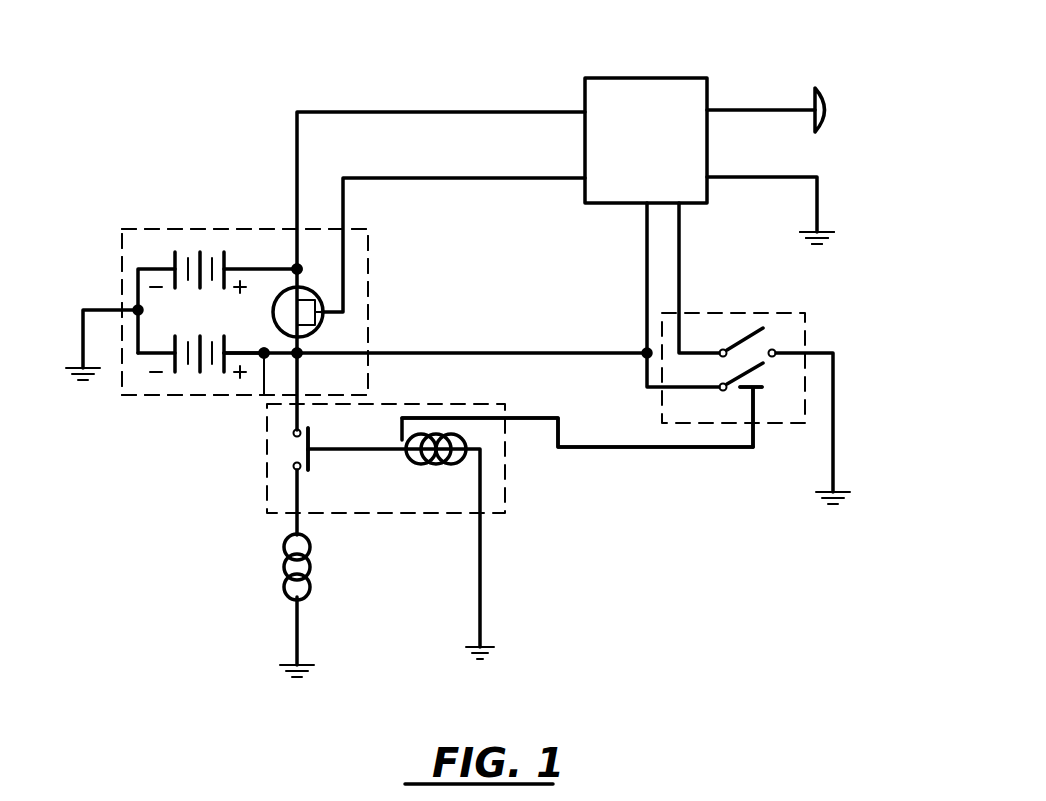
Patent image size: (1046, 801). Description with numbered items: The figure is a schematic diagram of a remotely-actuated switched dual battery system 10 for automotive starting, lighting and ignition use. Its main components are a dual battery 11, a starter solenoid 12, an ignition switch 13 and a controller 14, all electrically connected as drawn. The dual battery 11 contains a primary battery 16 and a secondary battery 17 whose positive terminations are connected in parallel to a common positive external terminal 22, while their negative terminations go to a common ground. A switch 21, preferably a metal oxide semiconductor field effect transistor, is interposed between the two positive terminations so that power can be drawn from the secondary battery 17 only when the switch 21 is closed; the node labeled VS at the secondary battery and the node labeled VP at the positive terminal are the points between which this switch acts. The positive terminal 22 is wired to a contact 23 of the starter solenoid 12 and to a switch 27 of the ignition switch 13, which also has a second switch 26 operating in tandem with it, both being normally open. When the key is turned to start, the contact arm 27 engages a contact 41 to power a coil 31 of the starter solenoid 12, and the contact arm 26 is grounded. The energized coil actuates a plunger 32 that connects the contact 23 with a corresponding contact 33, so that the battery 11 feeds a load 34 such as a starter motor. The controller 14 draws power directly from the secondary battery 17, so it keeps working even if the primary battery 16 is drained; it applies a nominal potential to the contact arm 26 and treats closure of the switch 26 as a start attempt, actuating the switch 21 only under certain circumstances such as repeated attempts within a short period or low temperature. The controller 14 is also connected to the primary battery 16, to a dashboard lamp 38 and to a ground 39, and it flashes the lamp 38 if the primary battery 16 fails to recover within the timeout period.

The remotely-actuated switched dual battery system 10 is at (203, 168).
The dual battery 11 is at (122, 229).
The starter solenoid 12 is at (267, 513).
The ignition switch 13 is at (805, 318).
The controller 14 is at (647, 78).
The primary battery 16 is at (190, 390).
The secondary battery 17 is at (185, 252).
The switch 21 is at (273, 312).
The positive external terminal 22 is at (300, 352).
The contact 23 is at (293, 433).
The second switch 26 is at (746, 330).
The switch 27 is at (733, 373).
The coil 31 is at (441, 456).
The plunger 32 is at (386, 452).
The contact 33 is at (293, 466).
The load 34 is at (288, 591).
The lamp 38 is at (830, 98).
The ground 39 is at (820, 205).
The contact 41 is at (760, 392).
The supply voltage node VS is at (297, 266).
The pulse voltage node VP is at (264, 396).